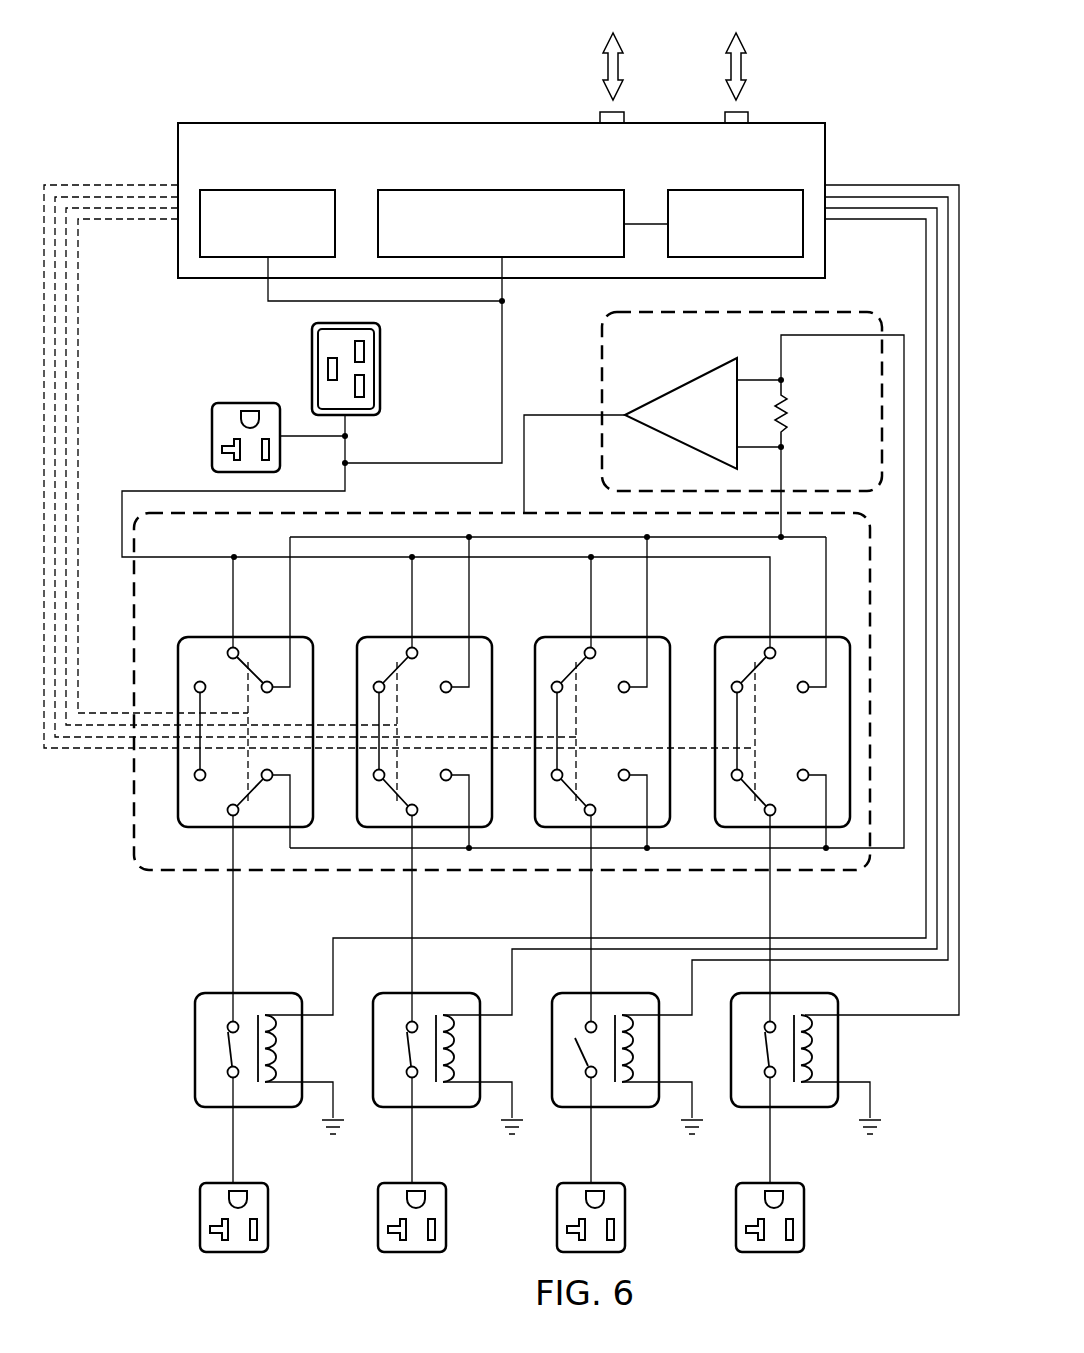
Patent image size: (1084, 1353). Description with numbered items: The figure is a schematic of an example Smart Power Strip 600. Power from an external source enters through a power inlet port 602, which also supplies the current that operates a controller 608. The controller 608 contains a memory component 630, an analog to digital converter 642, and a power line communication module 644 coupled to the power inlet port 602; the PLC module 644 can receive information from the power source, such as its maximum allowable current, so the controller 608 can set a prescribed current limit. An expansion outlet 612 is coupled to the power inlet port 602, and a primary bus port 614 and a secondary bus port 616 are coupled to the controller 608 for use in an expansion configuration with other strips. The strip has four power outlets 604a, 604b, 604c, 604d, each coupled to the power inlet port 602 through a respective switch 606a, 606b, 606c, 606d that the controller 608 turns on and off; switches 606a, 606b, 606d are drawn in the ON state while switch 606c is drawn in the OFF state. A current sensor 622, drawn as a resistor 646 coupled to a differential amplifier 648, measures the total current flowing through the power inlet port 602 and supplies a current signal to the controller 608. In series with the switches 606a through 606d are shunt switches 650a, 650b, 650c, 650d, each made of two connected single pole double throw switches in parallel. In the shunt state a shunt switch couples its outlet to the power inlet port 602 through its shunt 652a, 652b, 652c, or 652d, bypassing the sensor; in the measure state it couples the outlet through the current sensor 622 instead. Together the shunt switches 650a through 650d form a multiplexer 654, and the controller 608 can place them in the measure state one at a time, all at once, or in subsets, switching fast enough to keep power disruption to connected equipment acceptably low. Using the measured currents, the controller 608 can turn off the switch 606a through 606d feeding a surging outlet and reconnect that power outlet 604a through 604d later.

The Smart Power Strip 600 is at (116, 51).
The controller 608 is at (441, 121).
The power line communication module 644 is at (257, 190).
The analog to digital converter 642 is at (413, 190).
The memory component 630 is at (737, 190).
The primary bus port 614 is at (627, 119).
The secondary bus port 616 is at (751, 119).
The power inlet port 602 is at (312, 368).
The expansion outlet 612 is at (212, 424).
The current sensor 622 is at (846, 302).
The differential amplifier 648 is at (680, 380).
The resistor 646 is at (790, 412).
The multiplexer 654 is at (126, 791).
The shunt switch 650a is at (208, 630).
The shunt switch 650b is at (387, 630).
The shunt switch 650c is at (565, 630).
The shunt switch 650d is at (745, 630).
The shunt 652a is at (198, 758).
The shunt 652b is at (377, 758).
The shunt 652c is at (555, 758).
The shunt 652d is at (735, 758).
The switch 606a is at (186, 1054).
The switch 606b is at (448, 1114).
The switch 606c is at (627, 1114).
The switch 606d is at (806, 1114).
The power outlet 604a is at (200, 1218).
The power outlet 604b is at (378, 1218).
The power outlet 604c is at (625, 1218).
The power outlet 604d is at (804, 1218).